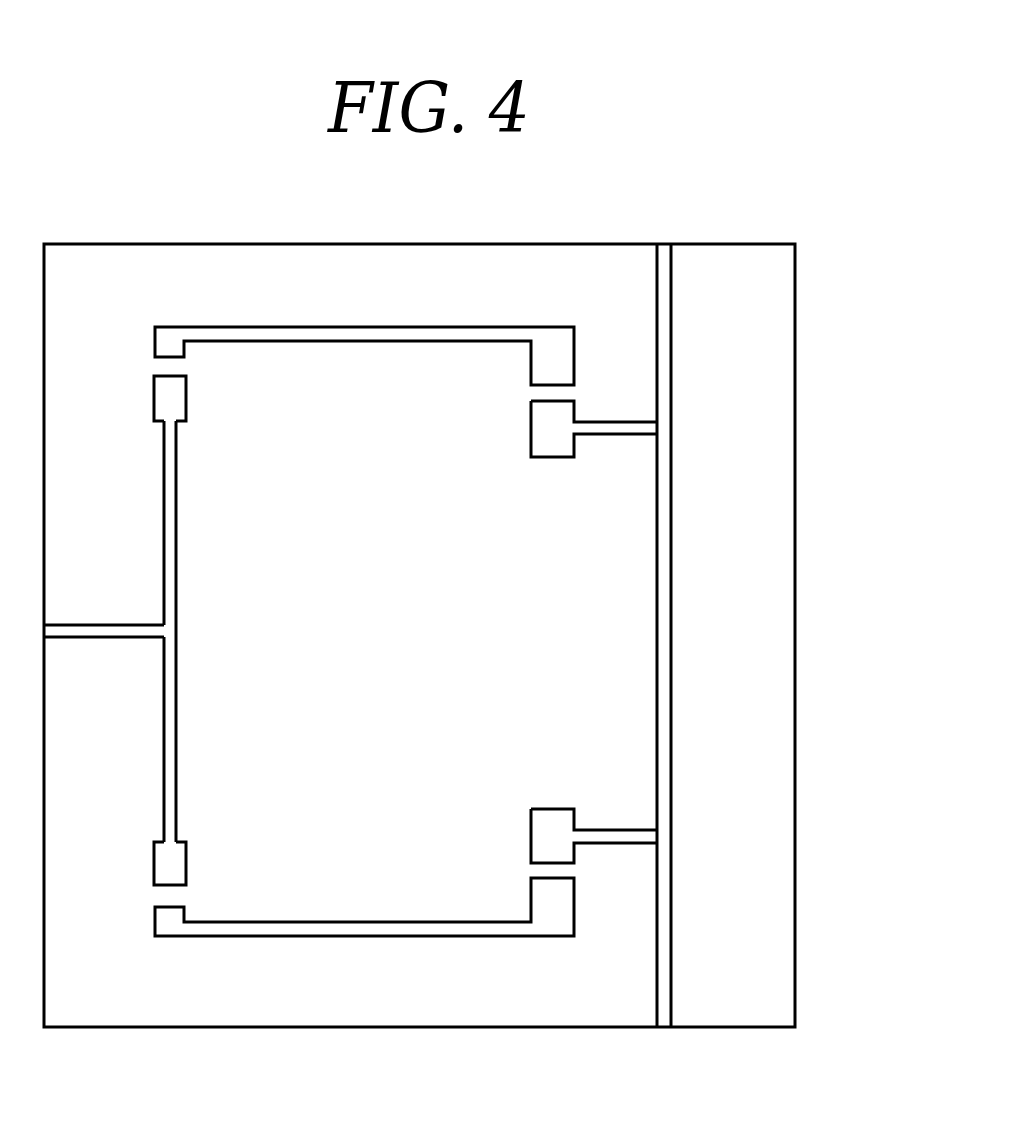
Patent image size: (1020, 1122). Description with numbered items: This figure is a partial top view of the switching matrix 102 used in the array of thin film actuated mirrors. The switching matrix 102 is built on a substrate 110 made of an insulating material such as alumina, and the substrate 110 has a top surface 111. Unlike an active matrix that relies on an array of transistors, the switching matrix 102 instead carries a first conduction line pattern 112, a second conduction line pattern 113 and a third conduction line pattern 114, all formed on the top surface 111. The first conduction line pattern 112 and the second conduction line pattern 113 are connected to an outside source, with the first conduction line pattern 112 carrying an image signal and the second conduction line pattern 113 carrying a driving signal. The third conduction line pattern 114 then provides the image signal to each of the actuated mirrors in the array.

The switching matrix 102 is at (798, 523).
The substrate 110 is at (794, 370).
The top surface 111 is at (722, 278).
The first conduction line pattern 112 is at (663, 515).
The second conduction line pattern 113 is at (88, 628).
The third conduction line pattern 114 is at (335, 340).